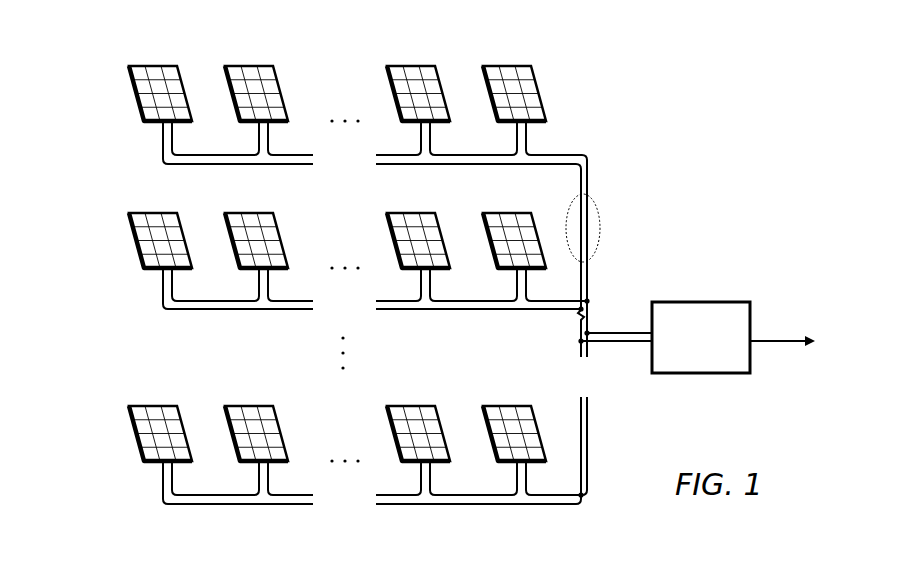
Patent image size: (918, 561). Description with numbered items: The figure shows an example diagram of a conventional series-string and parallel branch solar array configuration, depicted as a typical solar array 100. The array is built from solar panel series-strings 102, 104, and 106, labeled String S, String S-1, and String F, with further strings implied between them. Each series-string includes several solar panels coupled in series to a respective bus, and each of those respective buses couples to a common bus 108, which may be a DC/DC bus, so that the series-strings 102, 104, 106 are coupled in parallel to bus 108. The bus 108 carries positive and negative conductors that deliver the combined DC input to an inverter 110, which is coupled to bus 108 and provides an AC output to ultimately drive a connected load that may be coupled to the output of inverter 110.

The solar array 100 is at (612, 78).
The solar panel series-string 102 is at (108, 79).
The solar panel series-string 104 is at (108, 239).
The solar panel series-string 106 is at (108, 432).
The bus 108 is at (602, 223).
The inverter 110 is at (740, 370).